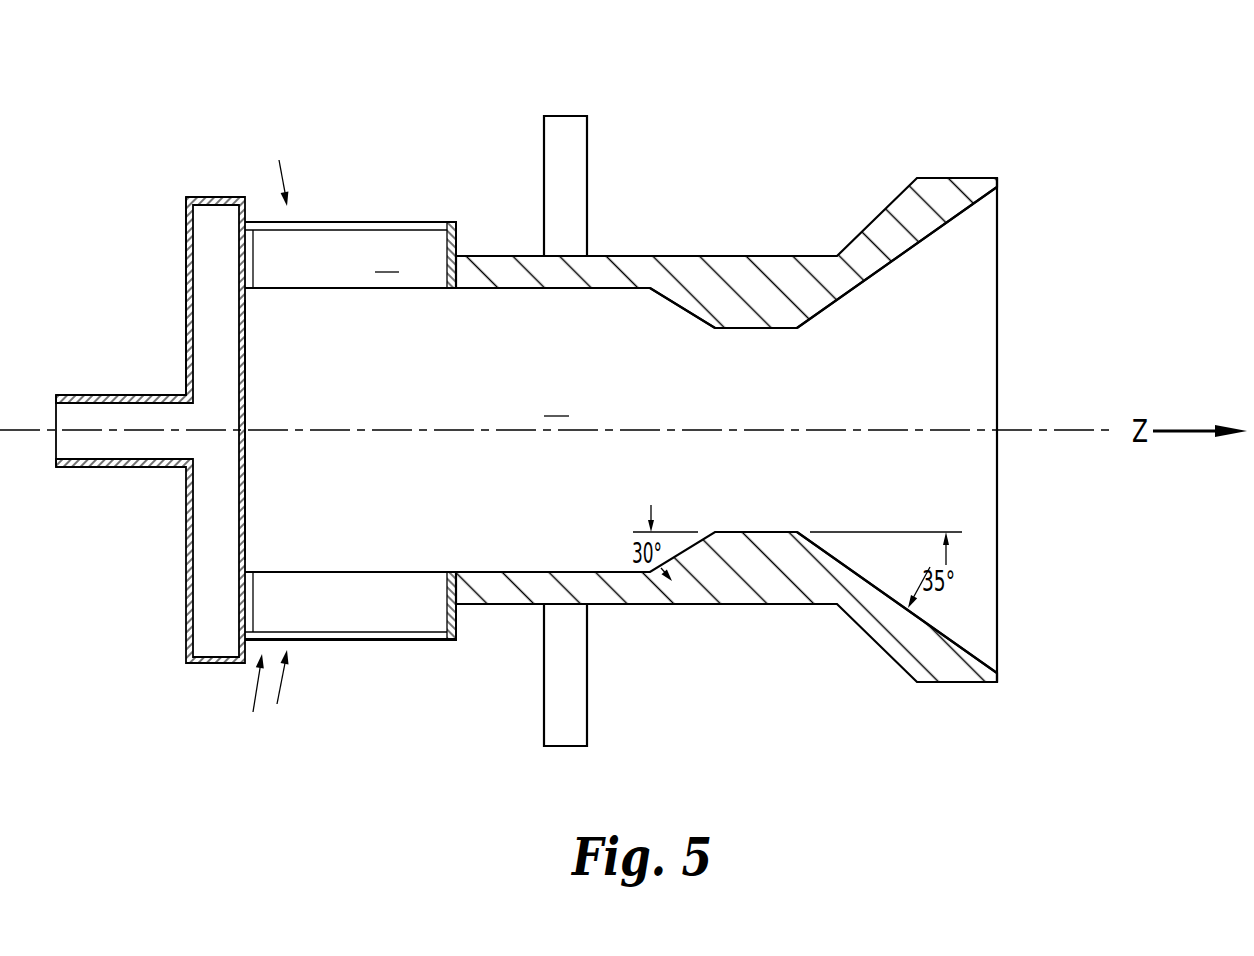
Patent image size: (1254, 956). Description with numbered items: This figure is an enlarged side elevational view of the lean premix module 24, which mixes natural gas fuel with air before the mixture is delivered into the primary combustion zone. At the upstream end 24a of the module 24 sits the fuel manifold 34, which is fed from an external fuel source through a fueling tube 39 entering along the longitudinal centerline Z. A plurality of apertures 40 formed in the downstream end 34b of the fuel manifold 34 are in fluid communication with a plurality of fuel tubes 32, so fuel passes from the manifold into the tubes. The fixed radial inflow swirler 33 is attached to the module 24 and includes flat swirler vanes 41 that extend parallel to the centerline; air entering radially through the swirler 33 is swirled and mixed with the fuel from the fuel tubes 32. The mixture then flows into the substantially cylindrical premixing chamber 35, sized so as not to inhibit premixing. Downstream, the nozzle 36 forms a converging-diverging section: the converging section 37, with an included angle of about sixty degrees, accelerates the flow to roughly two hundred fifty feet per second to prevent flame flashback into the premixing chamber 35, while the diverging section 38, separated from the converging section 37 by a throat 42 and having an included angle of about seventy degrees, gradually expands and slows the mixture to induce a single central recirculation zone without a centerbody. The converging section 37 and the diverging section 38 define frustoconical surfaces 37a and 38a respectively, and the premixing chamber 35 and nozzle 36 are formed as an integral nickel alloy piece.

The lean premix module 24 is at (816, 90).
The upstream end 24a is at (186, 304).
The fuel tubes 32 is at (400, 221).
The fixed radial inflow swirler 33 is at (317, 252).
The fuel manifold 34 is at (202, 590).
The downstream end 34b is at (245, 482).
The premixing chamber 35 is at (556, 401).
The nozzle 36 is at (797, 256).
The converging section 37 is at (668, 606).
The frustoconical surface 37a is at (657, 292).
The diverging section 38 is at (957, 647).
The frustoconical surface 38a is at (877, 273).
The fueling tube 39 is at (67, 468).
The apertures 40 is at (238, 638).
The flat swirler vanes 41 is at (387, 257).
The throat 42 is at (722, 328).